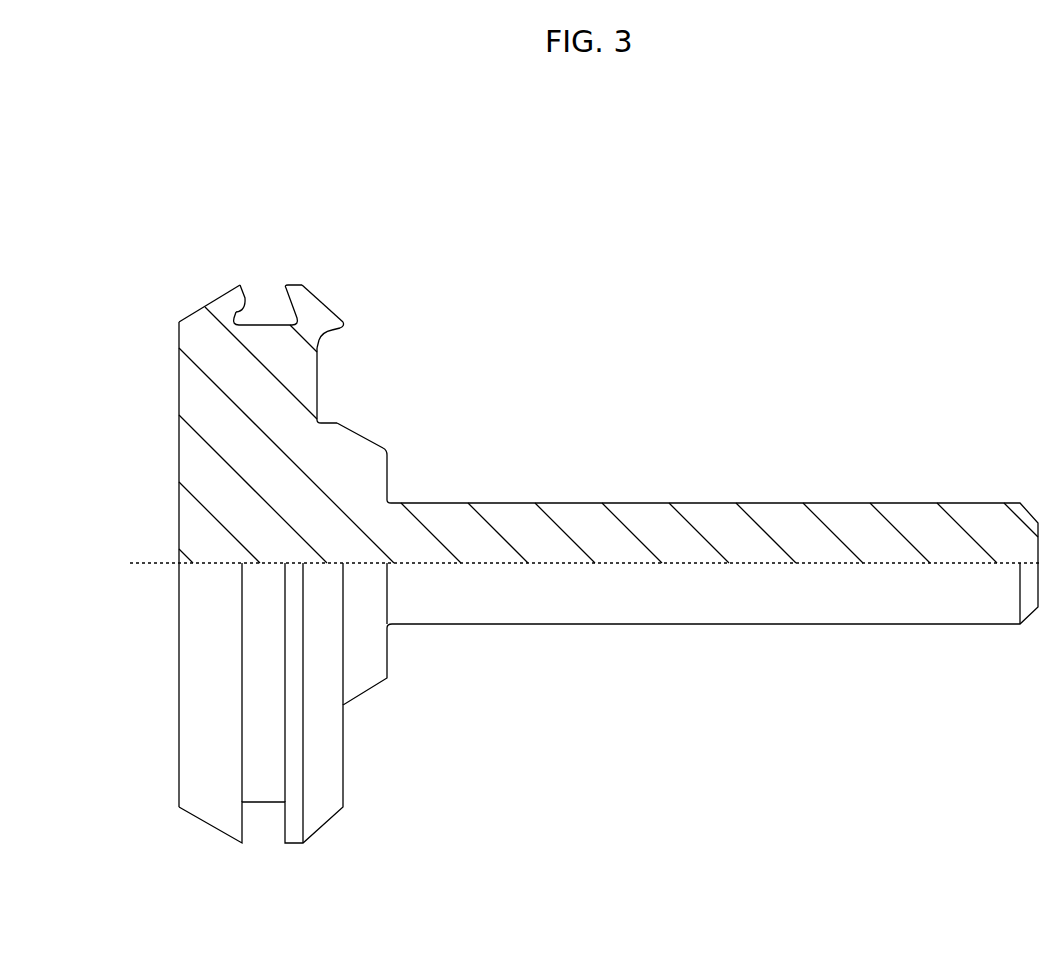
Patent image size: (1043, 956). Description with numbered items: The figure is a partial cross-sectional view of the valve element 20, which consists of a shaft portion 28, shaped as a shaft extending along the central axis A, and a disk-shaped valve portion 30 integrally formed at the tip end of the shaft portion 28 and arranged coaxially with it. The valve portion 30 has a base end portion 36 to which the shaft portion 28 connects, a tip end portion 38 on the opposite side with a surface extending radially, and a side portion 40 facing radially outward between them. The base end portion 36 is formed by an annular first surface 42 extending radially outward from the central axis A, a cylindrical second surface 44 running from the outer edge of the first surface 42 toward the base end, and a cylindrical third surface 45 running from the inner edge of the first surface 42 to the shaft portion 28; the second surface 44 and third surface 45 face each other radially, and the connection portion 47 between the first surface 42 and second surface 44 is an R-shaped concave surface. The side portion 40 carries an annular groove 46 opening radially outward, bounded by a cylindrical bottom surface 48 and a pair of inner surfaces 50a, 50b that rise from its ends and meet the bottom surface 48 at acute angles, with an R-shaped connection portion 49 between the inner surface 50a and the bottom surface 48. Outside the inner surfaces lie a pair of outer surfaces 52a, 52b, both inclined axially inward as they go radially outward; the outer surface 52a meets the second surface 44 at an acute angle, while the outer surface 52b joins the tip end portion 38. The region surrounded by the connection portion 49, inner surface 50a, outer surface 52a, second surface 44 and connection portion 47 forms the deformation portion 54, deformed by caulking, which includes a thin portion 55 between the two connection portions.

The valve element 20 is at (663, 215).
The shaft portion 28 is at (775, 517).
The valve portion 30 is at (165, 366).
The base end portion 36 is at (402, 462).
The tip end portion 38 is at (177, 447).
The side portion 40 is at (303, 282).
The first surface 42 is at (320, 383).
The second surface 44 is at (355, 337).
The third surface 45 is at (327, 425).
The groove 46 is at (256, 300).
The connection portion 47 is at (320, 335).
The bottom surface 48 is at (272, 323).
The connection portion 49 is at (343, 320).
The inner surface 50a is at (333, 287).
The inner surface 50b is at (238, 287).
The outer surface 52a is at (345, 318).
The outer surface 52b is at (200, 305).
The deformation portion 54 is at (315, 304).
The thin portion 55 is at (318, 345).
The central axis A is at (170, 562).